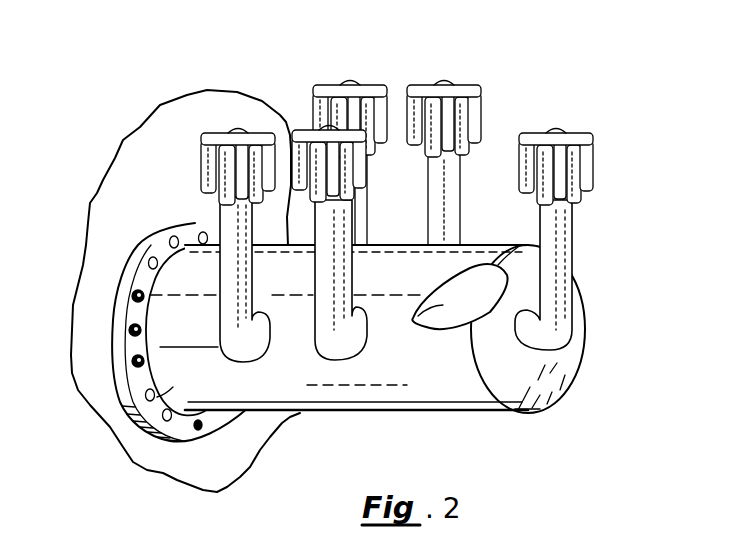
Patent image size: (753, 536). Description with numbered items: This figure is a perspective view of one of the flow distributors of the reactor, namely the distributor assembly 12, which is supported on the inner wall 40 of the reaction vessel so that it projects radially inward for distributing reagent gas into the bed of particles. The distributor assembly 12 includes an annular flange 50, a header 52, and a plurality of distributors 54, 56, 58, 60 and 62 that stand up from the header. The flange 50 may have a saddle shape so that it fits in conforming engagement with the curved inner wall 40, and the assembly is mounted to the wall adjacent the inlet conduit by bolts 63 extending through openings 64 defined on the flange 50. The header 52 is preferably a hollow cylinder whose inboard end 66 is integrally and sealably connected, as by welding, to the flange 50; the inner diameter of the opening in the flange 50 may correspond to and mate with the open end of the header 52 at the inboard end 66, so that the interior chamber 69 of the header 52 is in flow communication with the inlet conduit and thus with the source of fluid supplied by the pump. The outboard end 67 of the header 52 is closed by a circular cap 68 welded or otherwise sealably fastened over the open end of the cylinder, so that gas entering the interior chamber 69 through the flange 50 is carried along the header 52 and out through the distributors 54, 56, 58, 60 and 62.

The distributor assembly 12 is at (502, 103).
The inner wall 40 is at (157, 135).
The annular flange 50 is at (114, 306).
The header 52 is at (369, 417).
The distributor 54 is at (234, 124).
The distributor 56 is at (343, 82).
The distributor 58 is at (306, 124).
The distributor 60 is at (434, 82).
The distributor 62 is at (551, 127).
The bolts 63 is at (146, 357).
The openings 64 is at (130, 262).
The inboard end 66 is at (170, 385).
The outboard end 67 is at (545, 412).
The circular cap 68 is at (568, 357).
The interior chamber 69 is at (413, 320).